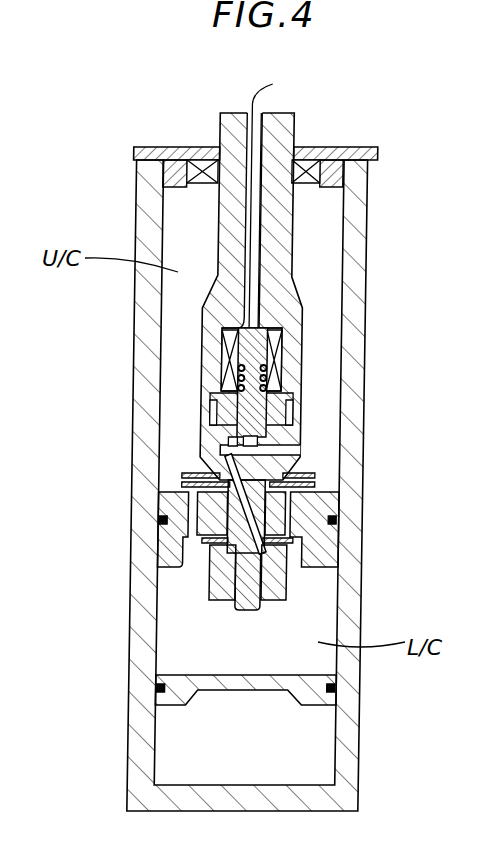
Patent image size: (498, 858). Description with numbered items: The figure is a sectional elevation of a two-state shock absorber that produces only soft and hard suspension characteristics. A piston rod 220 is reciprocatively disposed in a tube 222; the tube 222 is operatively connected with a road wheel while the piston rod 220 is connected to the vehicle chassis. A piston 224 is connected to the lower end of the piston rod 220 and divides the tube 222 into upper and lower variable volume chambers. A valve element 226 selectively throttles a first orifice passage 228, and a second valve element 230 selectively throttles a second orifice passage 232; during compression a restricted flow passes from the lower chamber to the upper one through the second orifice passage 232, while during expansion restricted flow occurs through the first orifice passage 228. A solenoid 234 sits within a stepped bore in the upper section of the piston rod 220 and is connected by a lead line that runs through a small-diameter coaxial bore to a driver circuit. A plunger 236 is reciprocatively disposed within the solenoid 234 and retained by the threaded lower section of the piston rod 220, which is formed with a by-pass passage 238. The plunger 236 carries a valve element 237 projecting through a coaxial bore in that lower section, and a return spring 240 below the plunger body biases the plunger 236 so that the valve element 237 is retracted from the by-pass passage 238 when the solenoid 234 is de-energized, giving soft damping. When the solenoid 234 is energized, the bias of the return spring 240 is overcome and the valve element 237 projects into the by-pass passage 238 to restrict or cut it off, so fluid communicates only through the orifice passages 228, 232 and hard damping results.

The piston rod 220 is at (288, 262).
The tube 222 is at (350, 743).
The piston 224 is at (330, 557).
The valve element 226 is at (296, 542).
The first orifice passage 228 is at (285, 514).
The second valve element 230 is at (190, 483).
The second orifice passage 232 is at (193, 512).
The solenoid 234 is at (222, 335).
The plunger 236 is at (230, 358).
The valve element 237 is at (238, 415).
The by-pass passage 238 is at (307, 452).
The return spring 240 is at (265, 370).